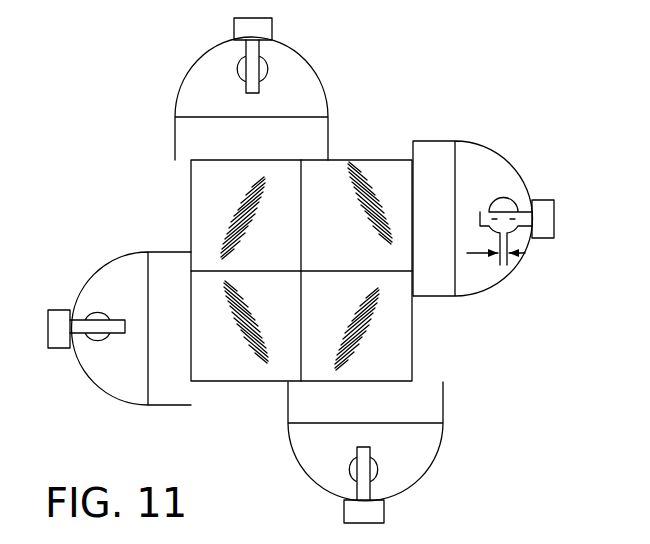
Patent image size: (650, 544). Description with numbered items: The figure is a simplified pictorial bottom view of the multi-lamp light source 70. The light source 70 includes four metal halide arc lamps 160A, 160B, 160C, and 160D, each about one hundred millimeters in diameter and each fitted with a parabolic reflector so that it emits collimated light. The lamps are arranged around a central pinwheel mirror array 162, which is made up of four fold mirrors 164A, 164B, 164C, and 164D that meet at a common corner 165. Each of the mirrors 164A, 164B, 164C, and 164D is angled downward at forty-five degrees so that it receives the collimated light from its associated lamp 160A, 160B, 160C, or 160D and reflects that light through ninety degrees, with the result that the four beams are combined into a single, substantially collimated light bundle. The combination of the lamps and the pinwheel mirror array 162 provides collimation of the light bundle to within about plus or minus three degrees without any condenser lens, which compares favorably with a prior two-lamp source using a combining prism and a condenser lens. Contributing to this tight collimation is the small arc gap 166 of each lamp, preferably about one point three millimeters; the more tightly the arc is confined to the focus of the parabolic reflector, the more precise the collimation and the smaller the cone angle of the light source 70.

The light source 70 is at (97, 92).
The pinwheel mirror array 162 is at (445, 325).
The common corner 165 is at (302, 268).
The mirror 164A is at (215, 183).
The mirror 164B is at (380, 173).
The mirror 164C is at (392, 345).
The mirror 164D is at (240, 372).
The metal halide arc lamp 160A is at (290, 62).
The metal halide arc lamp 160B is at (515, 183).
The metal halide arc lamp 160C is at (397, 482).
The metal halide arc lamp 160D is at (128, 390).
The arc gap 166 is at (240, 68).